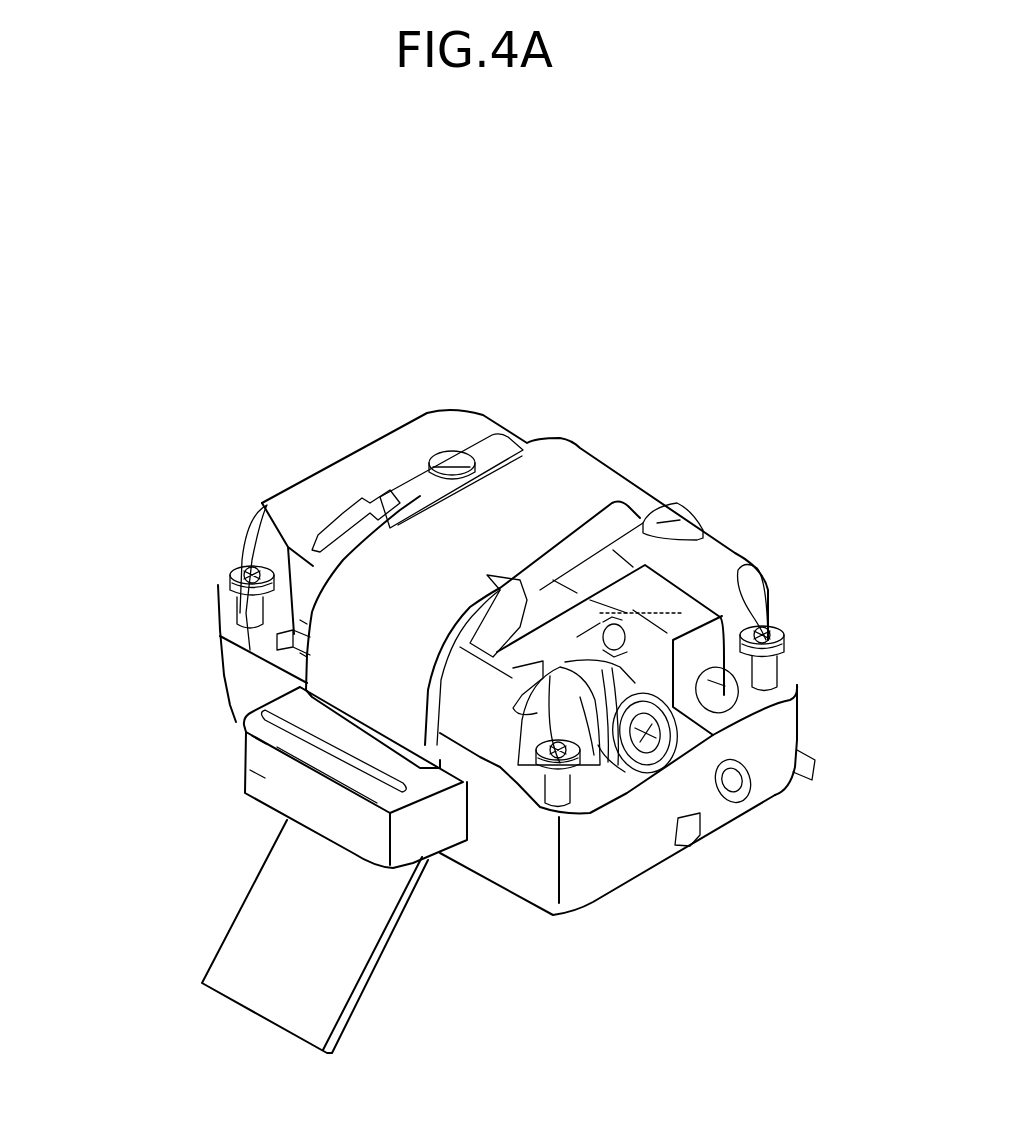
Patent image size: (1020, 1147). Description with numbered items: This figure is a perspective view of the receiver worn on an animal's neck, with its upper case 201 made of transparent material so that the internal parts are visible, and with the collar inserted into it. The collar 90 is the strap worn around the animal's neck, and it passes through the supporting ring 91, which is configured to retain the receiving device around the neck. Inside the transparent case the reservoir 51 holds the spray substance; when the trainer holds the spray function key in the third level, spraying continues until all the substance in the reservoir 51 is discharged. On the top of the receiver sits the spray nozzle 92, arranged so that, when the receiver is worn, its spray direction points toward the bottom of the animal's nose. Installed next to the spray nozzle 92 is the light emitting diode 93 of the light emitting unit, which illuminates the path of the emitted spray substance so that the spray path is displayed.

The reservoir 51 is at (553, 640).
The housing cover 201 is at (735, 553).
The collar 90 is at (340, 963).
The supporting ring 91 is at (247, 767).
The spray nozzle 92 is at (733, 714).
The light emitting diode 93 is at (627, 772).